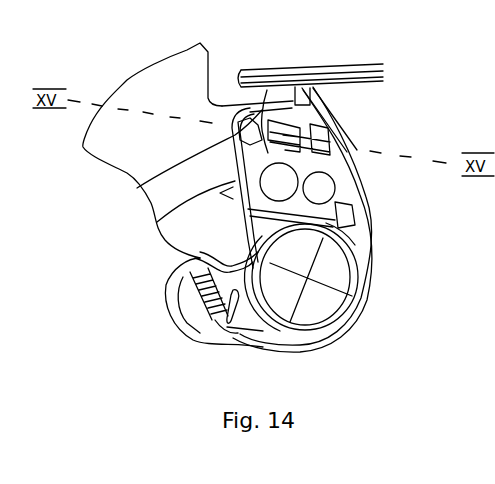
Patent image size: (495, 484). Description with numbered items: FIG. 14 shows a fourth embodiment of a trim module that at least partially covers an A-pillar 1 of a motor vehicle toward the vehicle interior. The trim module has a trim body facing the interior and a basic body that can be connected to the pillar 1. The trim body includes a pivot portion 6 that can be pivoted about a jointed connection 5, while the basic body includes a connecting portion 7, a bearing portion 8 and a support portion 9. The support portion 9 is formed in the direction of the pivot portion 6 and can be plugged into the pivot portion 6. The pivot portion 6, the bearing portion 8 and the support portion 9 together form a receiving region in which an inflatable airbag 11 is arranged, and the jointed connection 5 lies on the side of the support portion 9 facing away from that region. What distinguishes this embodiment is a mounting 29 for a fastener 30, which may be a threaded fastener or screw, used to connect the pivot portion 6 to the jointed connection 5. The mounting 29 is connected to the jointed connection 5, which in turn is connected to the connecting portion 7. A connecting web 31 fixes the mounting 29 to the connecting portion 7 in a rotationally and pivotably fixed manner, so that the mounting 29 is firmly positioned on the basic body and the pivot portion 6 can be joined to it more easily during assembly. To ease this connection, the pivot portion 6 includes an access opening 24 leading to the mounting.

The A-pillar 1 is at (82, 122).
The jointed connection 5 is at (267, 90).
The pivot portion 6 is at (372, 257).
The connecting portion 7 is at (157, 222).
The bearing portion 8 is at (200, 250).
The support portion 9 is at (340, 212).
The inflatable airbag 11 is at (327, 303).
The access opening 24 is at (349, 138).
The mounting 29 is at (300, 118).
The fastener 30 is at (340, 150).
The connecting web 31 is at (137, 188).